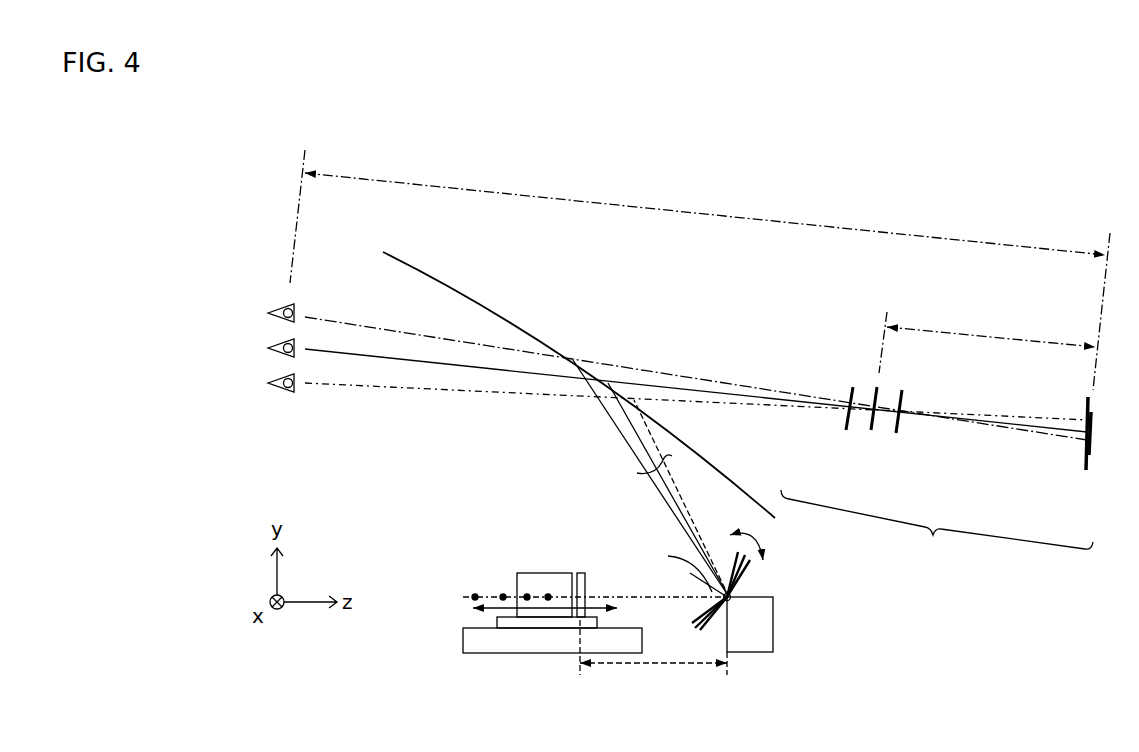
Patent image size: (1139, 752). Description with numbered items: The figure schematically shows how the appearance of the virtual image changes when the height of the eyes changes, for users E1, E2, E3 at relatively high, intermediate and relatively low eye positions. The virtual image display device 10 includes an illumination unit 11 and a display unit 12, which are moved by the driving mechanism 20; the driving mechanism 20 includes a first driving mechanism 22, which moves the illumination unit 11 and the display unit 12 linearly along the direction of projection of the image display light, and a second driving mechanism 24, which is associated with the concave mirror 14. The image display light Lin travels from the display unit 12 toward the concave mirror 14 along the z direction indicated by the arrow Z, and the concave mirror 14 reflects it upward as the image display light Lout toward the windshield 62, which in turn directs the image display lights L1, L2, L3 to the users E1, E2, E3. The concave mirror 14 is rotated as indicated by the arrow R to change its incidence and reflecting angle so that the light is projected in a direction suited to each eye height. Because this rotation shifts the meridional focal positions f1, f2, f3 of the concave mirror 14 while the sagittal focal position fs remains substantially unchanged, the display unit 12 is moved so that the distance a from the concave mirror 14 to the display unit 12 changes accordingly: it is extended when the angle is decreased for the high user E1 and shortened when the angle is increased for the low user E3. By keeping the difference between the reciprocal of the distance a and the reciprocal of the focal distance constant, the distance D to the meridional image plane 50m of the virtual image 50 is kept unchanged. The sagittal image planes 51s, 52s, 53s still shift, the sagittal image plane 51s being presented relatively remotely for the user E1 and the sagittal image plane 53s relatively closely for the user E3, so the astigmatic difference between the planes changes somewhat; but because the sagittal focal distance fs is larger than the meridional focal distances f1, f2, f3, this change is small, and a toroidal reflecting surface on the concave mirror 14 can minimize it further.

The virtual image display device 10 is at (428, 551).
The illumination unit 11 is at (553, 572).
The display unit 12 is at (582, 572).
The concave mirror 14 is at (748, 565).
The driving mechanism 20 is at (446, 658).
The first driving mechanism 22 is at (535, 654).
The second driving mechanism 24 is at (750, 653).
The screen unit 50 is at (937, 530).
The meridional image plane 50m is at (1080, 477).
The sagittal image plane 51s is at (895, 440).
The sagittal image plane 52s is at (869, 437).
The sagittal image plane 53s is at (841, 438).
The windshield 62 is at (472, 297).
The user E1 is at (264, 313).
The user E2 is at (264, 348).
The user E3 is at (264, 383).
The image display light L1 is at (365, 325).
The image display light L2 is at (420, 363).
The image display light L3 is at (360, 388).
The image display light Lout is at (647, 470).
The image display light Lin is at (629, 596).
The distance D is at (726, 214).
The arrow R is at (762, 540).
The distance a is at (656, 665).
The arrow z Z is at (508, 620).
The sagittal focal position fs is at (472, 596).
The meridional focal position f1 is at (500, 596).
The meridional focal position f2 is at (525, 596).
The meridional focal position f3 is at (546, 596).